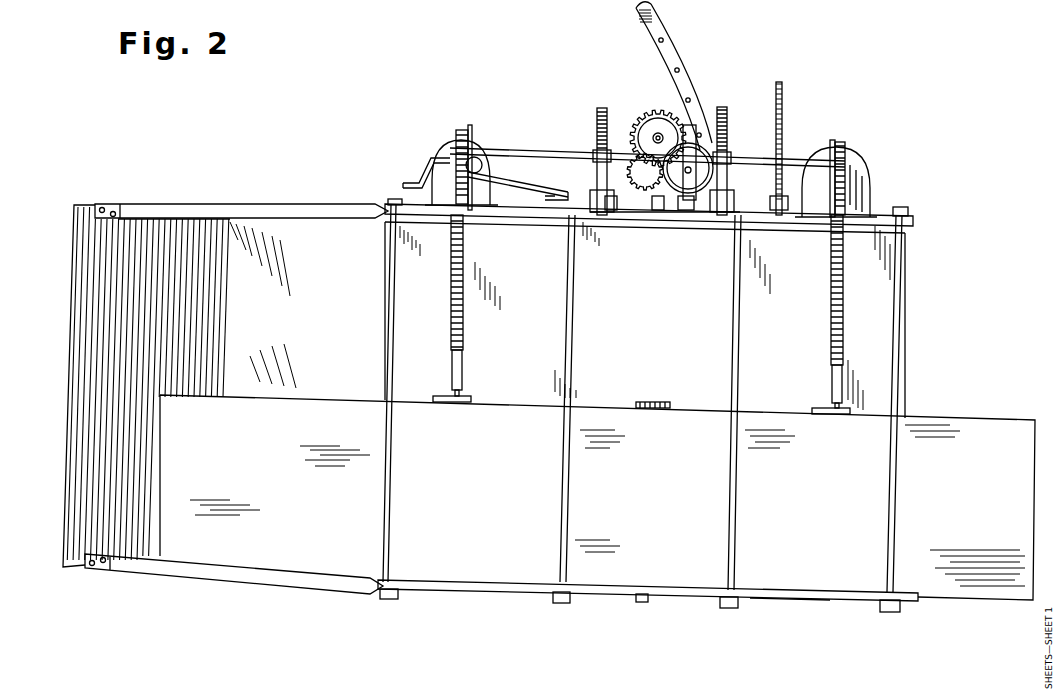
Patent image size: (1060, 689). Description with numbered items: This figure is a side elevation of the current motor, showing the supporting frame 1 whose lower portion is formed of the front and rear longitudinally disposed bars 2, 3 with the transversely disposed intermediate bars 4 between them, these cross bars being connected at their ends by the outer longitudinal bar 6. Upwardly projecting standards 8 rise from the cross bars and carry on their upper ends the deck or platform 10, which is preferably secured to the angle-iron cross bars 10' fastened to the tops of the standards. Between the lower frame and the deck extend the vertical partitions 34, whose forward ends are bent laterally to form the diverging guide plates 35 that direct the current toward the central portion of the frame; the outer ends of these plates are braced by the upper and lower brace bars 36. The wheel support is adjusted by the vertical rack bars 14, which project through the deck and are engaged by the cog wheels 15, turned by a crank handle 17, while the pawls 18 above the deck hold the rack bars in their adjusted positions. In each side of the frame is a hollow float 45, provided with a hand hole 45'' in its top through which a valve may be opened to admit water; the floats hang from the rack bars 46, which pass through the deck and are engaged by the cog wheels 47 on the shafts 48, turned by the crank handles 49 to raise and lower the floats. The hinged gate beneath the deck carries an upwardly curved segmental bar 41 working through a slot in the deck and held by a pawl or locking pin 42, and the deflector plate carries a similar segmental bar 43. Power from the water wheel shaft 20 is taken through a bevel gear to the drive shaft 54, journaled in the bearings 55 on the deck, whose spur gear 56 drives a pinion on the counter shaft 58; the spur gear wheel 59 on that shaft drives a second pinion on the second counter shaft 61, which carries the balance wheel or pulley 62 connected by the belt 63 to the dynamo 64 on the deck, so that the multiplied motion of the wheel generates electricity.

The supporting frame 1 is at (790, 610).
The front bar 2 is at (392, 594).
The rear bar 3 is at (898, 603).
The intermediate bars 4 is at (562, 598).
The outer longitudinal bar 6 is at (502, 590).
The standards 8 is at (390, 484).
The deck or platform 10 is at (671, 209).
The angle-iron cross bars 10' is at (645, 232).
The rack bars 14 is at (596, 108).
The cog wheels 15 is at (594, 146).
The crank handle 17 is at (538, 172).
The pawls 18 is at (597, 185).
The shaft 20 is at (640, 600).
The vertical partitions 34 is at (645, 320).
The diverging guide plates 35 is at (72, 300).
The brace bars 36 is at (240, 204).
The segmental bar 41 is at (784, 88).
The pawl or locking pin 42 is at (786, 204).
The segmental bar 43 is at (642, 18).
The hollow float 45 is at (597, 497).
The hand hole 45'' is at (657, 390).
The rack bars 46 is at (464, 326).
The cog wheels 47 is at (462, 124).
The shafts 48 is at (510, 148).
The crank handles 49 is at (424, 170).
The drive shaft 54 is at (652, 134).
The bearings 55 is at (626, 212).
The spur gear 56 is at (657, 118).
The counter shaft 58 is at (670, 196).
The spur gear wheel 59 is at (651, 212).
The second counter shaft 61 is at (690, 166).
The balance wheel or pulley 62 is at (690, 212).
The belt 63 is at (542, 160).
The dynamo 64 is at (448, 142).